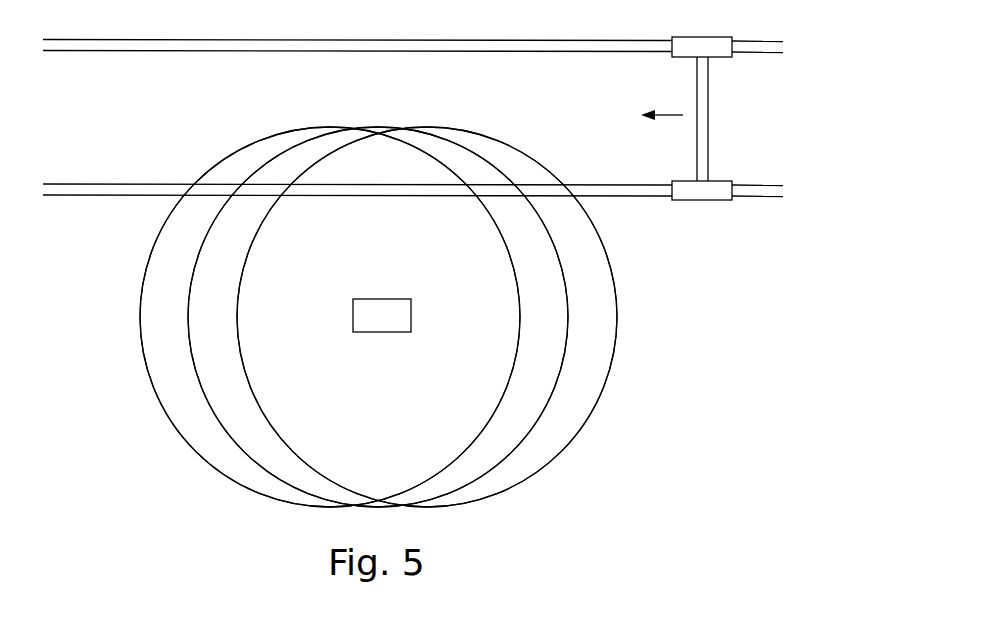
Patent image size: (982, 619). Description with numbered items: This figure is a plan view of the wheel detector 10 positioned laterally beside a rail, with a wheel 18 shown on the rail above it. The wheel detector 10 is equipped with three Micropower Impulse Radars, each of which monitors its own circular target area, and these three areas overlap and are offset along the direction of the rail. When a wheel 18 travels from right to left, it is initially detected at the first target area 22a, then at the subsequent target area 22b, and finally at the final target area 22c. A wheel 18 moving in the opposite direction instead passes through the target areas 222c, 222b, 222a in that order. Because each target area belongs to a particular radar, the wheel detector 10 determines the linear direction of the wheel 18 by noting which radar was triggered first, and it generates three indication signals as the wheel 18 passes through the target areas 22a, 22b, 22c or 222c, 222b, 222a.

The wheel detector 10 is at (385, 332).
The wheel 18 is at (706, 200).
The first target area 22a is at (427, 311).
The subsequent target area 22b is at (378, 289).
The final target area 22c is at (330, 317).
The target area 222a is at (427, 317).
The target area 222b is at (378, 289).
The target area 222c is at (330, 310).